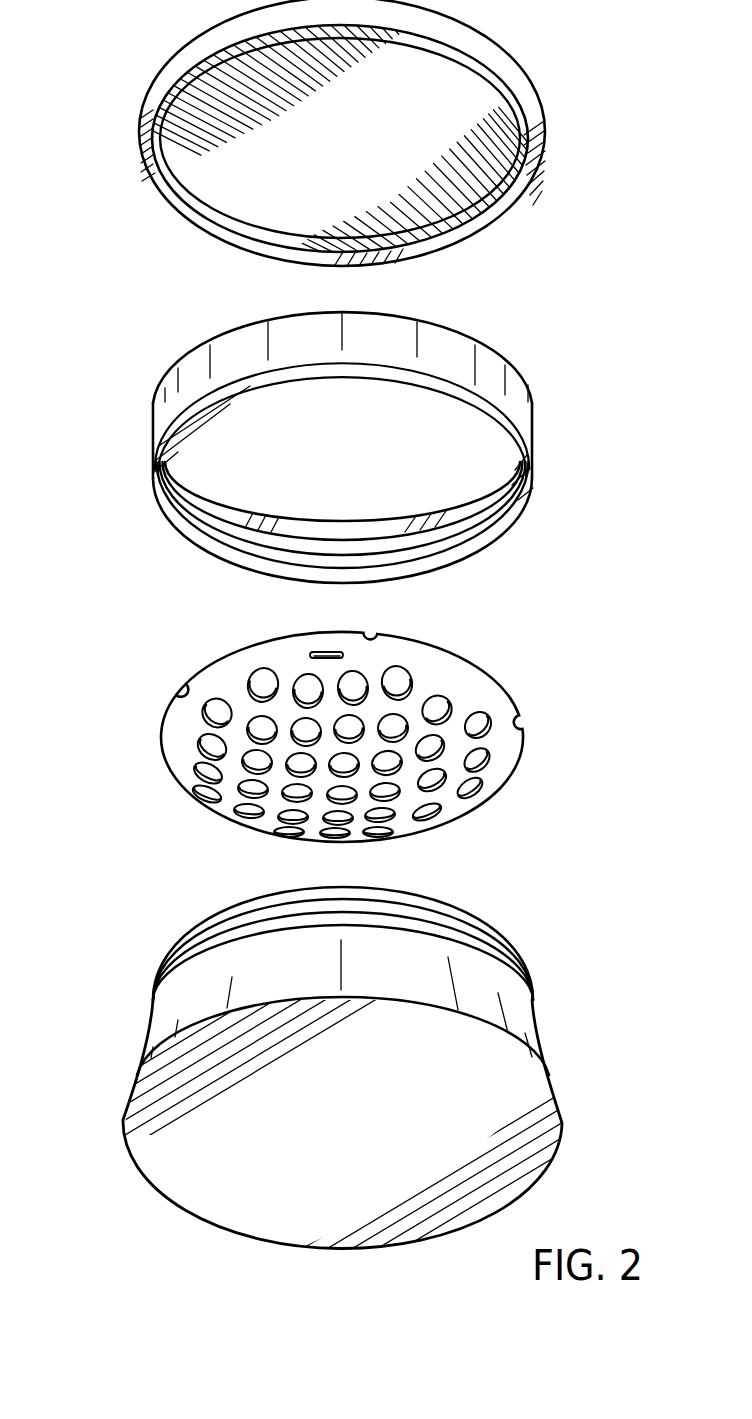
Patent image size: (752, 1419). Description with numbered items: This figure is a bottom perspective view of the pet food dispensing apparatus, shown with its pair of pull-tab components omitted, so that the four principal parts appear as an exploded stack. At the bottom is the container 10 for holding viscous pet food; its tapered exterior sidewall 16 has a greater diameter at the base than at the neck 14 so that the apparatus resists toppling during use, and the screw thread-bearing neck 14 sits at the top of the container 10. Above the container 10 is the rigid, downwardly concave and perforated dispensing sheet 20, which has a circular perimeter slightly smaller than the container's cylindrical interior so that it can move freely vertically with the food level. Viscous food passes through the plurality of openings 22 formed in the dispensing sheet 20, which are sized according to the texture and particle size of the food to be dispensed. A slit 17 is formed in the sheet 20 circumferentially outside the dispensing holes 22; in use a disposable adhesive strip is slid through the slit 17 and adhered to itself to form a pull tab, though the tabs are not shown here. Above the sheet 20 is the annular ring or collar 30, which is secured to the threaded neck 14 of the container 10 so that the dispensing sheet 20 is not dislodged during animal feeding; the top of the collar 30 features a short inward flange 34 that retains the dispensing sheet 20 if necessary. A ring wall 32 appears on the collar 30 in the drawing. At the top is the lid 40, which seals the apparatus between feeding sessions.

The container 10 is at (332, 1067).
The neck 14 is at (228, 918).
The exterior sidewall 16 is at (307, 977).
The slit 17 is at (323, 652).
The dispensing sheet 20 is at (313, 722).
The openings 22 is at (440, 785).
The collar 30 is at (306, 450).
The ring wall 32 is at (173, 502).
The inward flange 34 is at (320, 522).
The lid 40 is at (134, 126).